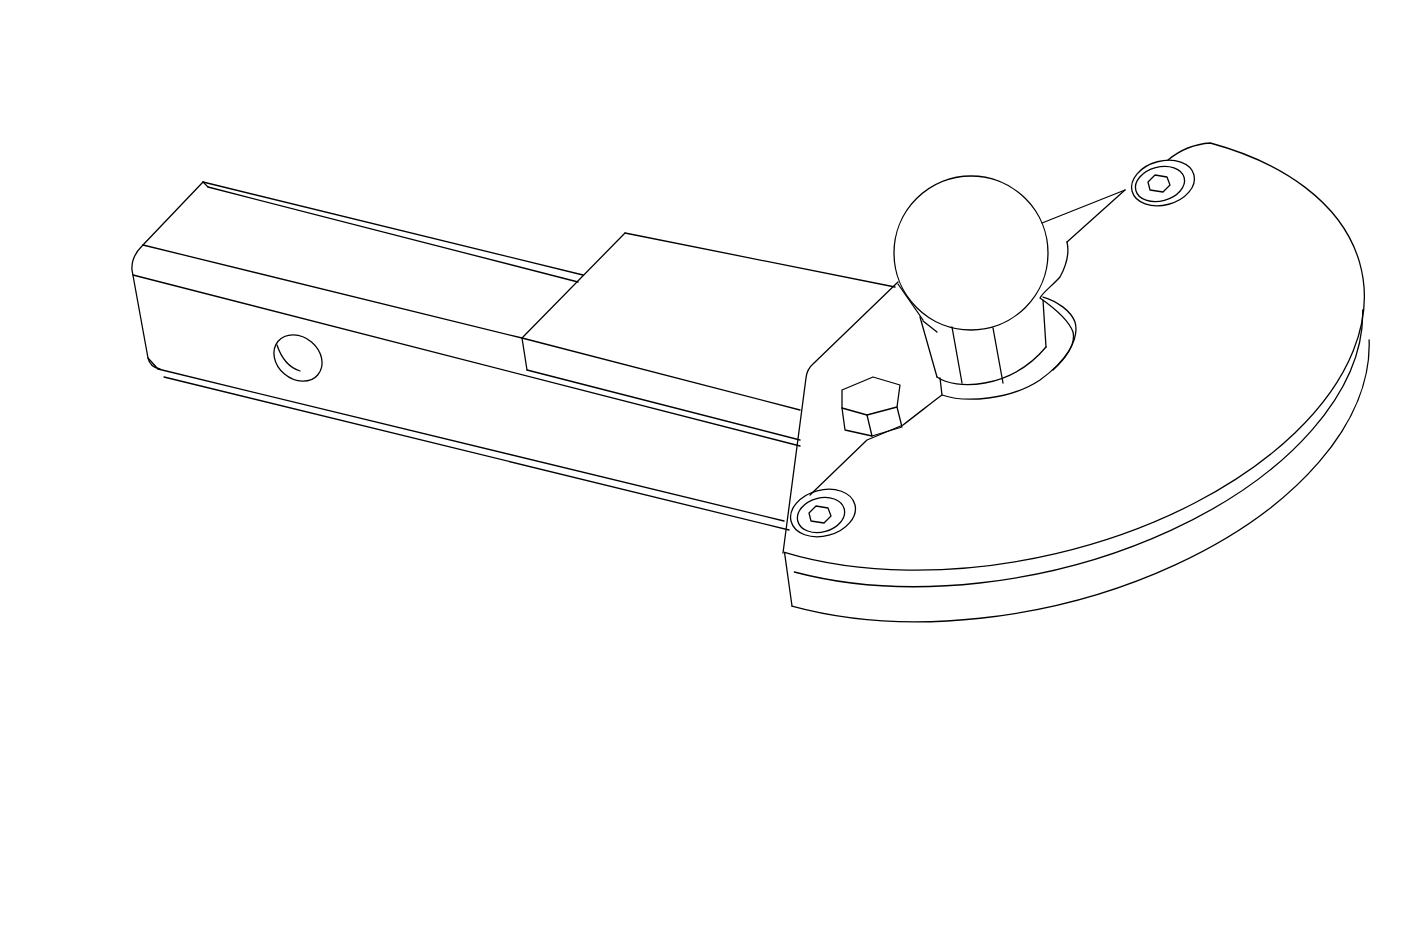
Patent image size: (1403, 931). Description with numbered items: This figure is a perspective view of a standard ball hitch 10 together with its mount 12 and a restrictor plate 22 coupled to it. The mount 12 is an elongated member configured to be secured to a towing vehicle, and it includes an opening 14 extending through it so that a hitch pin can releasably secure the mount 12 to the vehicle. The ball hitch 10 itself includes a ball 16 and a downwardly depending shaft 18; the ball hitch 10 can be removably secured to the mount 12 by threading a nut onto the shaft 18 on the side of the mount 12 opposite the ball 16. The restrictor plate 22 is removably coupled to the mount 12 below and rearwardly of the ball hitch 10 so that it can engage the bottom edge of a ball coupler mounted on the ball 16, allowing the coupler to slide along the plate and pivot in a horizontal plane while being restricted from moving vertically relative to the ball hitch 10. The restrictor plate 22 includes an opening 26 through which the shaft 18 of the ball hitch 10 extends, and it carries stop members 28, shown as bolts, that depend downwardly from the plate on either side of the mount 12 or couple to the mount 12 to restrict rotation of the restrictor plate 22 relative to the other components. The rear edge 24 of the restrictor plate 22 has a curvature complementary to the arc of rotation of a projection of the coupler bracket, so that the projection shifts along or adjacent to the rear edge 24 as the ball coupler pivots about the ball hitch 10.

The ball hitch 10 is at (666, 104).
The mount 12 is at (443, 262).
The opening 14 is at (302, 372).
The ball 16 is at (965, 192).
The shaft 18 is at (895, 285).
The restrictor plate 22 is at (1010, 525).
The rear edge 24 is at (1147, 555).
The opening 26 is at (947, 392).
The stop members 28 is at (857, 398).